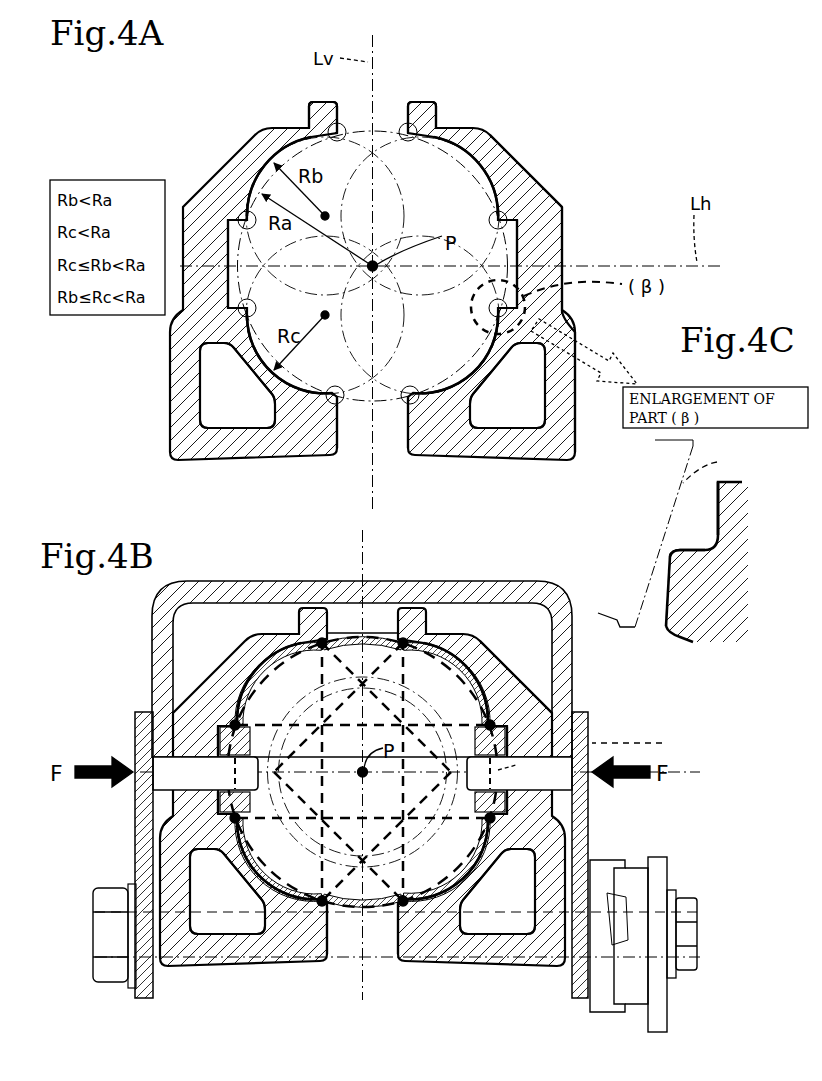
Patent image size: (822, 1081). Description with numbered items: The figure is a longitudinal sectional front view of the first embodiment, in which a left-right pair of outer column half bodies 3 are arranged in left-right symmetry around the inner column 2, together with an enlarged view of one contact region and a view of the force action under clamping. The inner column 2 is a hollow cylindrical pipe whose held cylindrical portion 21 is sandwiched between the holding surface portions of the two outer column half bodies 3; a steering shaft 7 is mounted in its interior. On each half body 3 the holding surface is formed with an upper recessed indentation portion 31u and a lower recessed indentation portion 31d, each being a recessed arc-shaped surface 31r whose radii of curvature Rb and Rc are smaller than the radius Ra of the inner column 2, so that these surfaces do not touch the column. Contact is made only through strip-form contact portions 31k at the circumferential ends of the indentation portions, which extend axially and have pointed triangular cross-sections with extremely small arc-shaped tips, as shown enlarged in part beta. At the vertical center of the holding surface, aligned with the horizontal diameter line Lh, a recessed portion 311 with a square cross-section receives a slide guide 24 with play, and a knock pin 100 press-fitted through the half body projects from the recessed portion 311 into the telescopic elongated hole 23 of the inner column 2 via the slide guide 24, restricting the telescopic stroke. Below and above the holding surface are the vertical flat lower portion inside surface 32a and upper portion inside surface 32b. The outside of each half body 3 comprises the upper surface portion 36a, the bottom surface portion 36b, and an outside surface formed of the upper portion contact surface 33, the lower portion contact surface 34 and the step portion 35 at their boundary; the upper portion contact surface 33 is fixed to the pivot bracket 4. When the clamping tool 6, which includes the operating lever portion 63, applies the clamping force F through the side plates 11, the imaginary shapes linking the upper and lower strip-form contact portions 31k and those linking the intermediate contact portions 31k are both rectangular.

In FIG. 4A, the inner column 2 is at (385, 124).
In FIG. 4C, the inner column 2 is at (710, 469).
In FIG. 4B, the inner column 2 is at (322, 640).
In FIG. 4A, the outer column half body 3 is at (216, 150).
In FIG. 4B, the pivot bracket 4 is at (534, 580).
In FIG. 4B, the clamping tool 6 is at (672, 876).
In FIG. 4B, the steering shaft 7 is at (300, 925).
In FIG. 4B, the side plate 11 is at (587, 740).
In FIG. 4B, the held cylindrical portion 21 is at (340, 628).
In FIG. 4B, the telescopic elongated hole 23 is at (639, 746).
In FIG. 4B, the slide guide 24 is at (505, 742).
In FIG. 4A, the lower recessed indentation portion 31d is at (290, 386).
In FIG. 4C, the lower recessed indentation portion 31d is at (668, 560).
In FIG. 4B, the lower recessed indentation portion 31d is at (280, 891).
In FIG. 4A, the strip-form contact portion 31k is at (340, 141).
In FIG. 4C, the strip-form contact portion 31k is at (672, 562).
In FIG. 4B, the strip-form contact portion 31k is at (321, 640).
In FIG. 4A, the recessed arc-shaped surface 31r is at (285, 130).
In FIG. 4C, the recessed arc-shaped surface 31r is at (666, 605).
In FIG. 4B, the recessed arc-shaped surface 31r is at (262, 640).
In FIG. 4A, the upper recessed indentation portion 31u is at (252, 184).
In FIG. 4B, the upper recessed indentation portion 31u is at (247, 662).
In FIG. 4A, the lower portion inside surface 32a is at (409, 422).
In FIG. 4A, the upper portion inside surface 32b is at (407, 112).
In FIG. 4A, the upper portion contact surface 33 is at (563, 257).
In FIG. 4A, the lower portion contact surface 34 is at (578, 417).
In FIG. 4A, the step portion 35 is at (567, 318).
In FIG. 4A, the upper surface portion 36a is at (554, 197).
In FIG. 4B, the upper surface portion 36a is at (384, 636).
In FIG. 4B, the bottom surface portion 36b is at (385, 912).
In FIG. 4B, the operating lever portion 63 is at (668, 1000).
In FIG. 4B, the knock pin 100 is at (200, 758).
In FIG. 4A, the recessed portion 311 is at (512, 238).
In FIG. 4C, the recessed portion 311 is at (716, 535).
In FIG. 4B, the recessed portion 311 is at (510, 735).